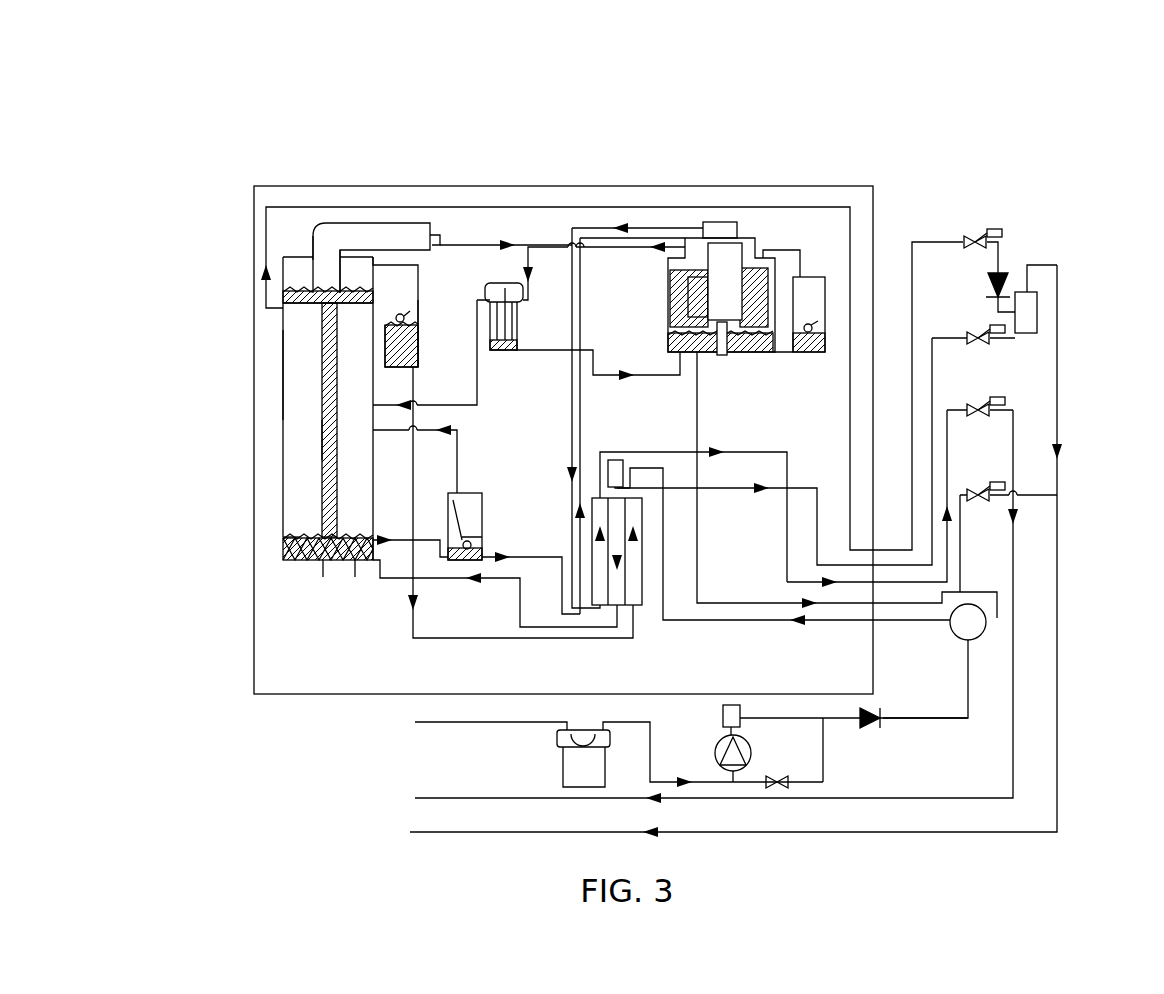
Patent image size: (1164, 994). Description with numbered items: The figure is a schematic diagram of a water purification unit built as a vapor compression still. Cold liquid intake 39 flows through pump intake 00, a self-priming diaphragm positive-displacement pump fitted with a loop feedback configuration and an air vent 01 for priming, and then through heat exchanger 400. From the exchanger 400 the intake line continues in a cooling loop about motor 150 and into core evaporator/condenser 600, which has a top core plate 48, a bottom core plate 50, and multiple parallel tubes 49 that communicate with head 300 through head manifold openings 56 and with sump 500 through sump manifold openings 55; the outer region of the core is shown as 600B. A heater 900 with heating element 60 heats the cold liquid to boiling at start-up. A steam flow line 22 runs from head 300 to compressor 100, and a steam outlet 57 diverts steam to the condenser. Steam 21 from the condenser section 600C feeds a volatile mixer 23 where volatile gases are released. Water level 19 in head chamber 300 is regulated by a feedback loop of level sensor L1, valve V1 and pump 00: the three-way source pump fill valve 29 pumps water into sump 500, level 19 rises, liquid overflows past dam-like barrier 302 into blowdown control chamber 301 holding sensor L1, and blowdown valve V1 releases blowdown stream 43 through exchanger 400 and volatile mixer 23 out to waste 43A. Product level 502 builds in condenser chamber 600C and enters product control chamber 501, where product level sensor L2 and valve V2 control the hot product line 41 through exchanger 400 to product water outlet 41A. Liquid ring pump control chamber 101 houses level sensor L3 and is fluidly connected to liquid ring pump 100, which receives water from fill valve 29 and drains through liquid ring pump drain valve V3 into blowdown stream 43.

The water level 19 is at (332, 290).
The steam 21 is at (266, 240).
The steam flow line 22 is at (478, 243).
The volatile mixer 23 is at (1037, 308).
The three-way source pump fill valve 29 is at (980, 638).
The cold liquid intake 39 is at (647, 228).
The product stream 41 is at (562, 556).
The product water outlet 41A is at (455, 798).
The blowdown stream 43 is at (417, 390).
The waste 43A is at (480, 832).
The top core plate 48 is at (288, 322).
The parallel tubes 49 is at (322, 437).
The bottom core plate 50 is at (285, 538).
The sump manifold openings 55 is at (333, 547).
The head manifold openings 56 is at (318, 253).
The steam outlet 57 is at (552, 247).
The heating element 60 is at (323, 563).
The liquid ring pump 100 is at (762, 250).
The liquid ring pump control chamber 101 is at (817, 277).
The motor 150 is at (722, 222).
The head chamber 300 is at (296, 279).
The blowdown control chamber 301 is at (421, 350).
The dam-like barrier 302 is at (350, 290).
The heat exchanger 400 is at (643, 607).
The sump 500 is at (300, 543).
The product control chamber 501 is at (467, 493).
The product level 502 is at (378, 500).
The core evaporator/condenser 600 is at (283, 486).
The column outer chamber 600B is at (300, 350).
The condenser section 600C is at (340, 380).
The heater 900 is at (312, 543).
The air vent 01 is at (723, 713).
The pump 00 is at (753, 752).
The level sensor L1 is at (388, 317).
The product level sensor L2 is at (448, 513).
The liquid ring pump level sensor L3 is at (826, 322).
The blowdown valve V1 is at (987, 323).
The valve V2 is at (1003, 395).
The liquid ring pump drain valve V3 is at (992, 487).